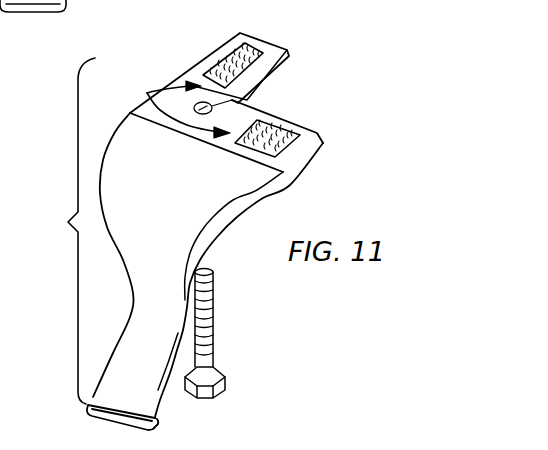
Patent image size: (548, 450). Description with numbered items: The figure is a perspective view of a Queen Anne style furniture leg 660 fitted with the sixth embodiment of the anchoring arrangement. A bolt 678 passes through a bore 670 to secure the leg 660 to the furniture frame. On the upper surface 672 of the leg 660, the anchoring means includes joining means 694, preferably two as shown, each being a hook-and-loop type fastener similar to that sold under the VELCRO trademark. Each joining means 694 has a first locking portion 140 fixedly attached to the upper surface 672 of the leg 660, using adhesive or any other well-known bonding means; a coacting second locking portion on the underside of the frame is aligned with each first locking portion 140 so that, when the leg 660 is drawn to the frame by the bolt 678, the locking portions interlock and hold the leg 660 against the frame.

The first locking portion 140 is at (248, 53).
The leg 660 is at (187, 218).
The bore 670 is at (236, 99).
The upper surface 672 is at (316, 133).
The bolt 678 is at (214, 333).
The joining means 694 is at (147, 93).